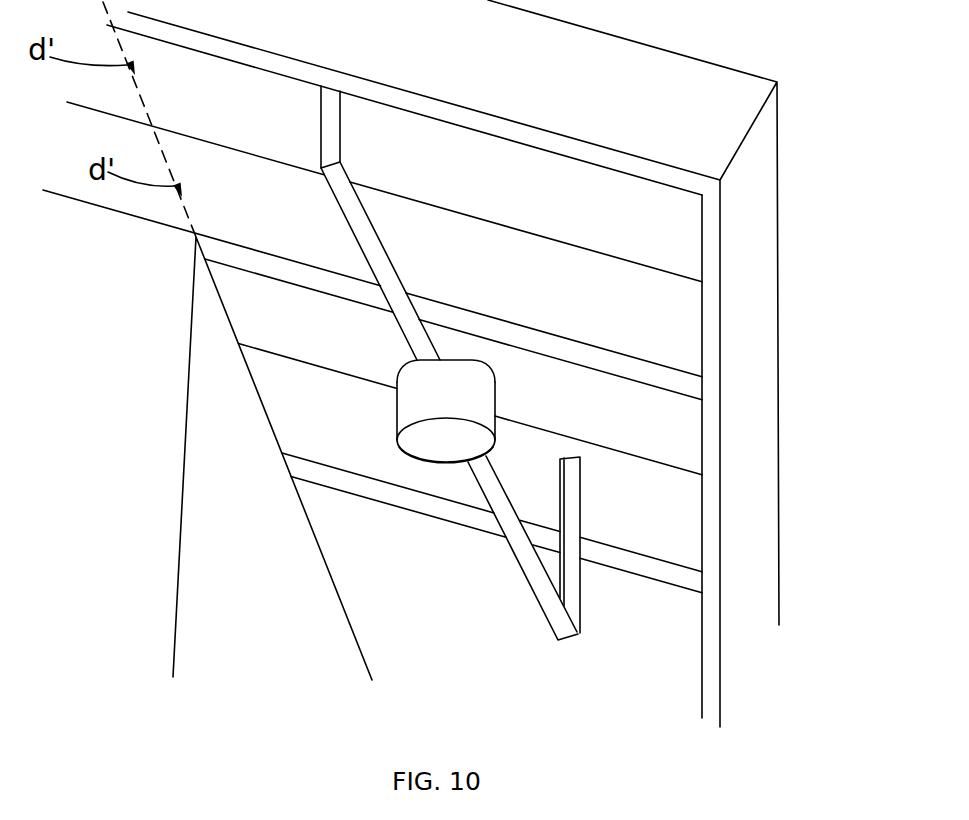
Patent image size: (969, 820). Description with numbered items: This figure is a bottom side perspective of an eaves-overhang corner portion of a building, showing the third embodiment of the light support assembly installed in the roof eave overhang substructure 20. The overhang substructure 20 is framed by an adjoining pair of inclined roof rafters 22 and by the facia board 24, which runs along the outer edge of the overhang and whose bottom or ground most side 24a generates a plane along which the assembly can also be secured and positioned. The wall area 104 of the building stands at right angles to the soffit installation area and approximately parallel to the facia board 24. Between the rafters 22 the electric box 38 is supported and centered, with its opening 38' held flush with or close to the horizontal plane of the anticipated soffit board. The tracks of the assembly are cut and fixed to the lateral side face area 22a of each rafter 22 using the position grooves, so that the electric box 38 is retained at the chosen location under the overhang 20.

The roof eave overhang substructure 20 is at (437, 612).
The roof rafters 22 is at (580, 163).
The lateral side face area 22a is at (363, 121).
The facia board 24 is at (760, 448).
The bottom or ground most side of the facia board 24a is at (483, 127).
The electric box 38 is at (383, 411).
The opening of the box 38' is at (404, 445).
The wall area 104 is at (204, 447).